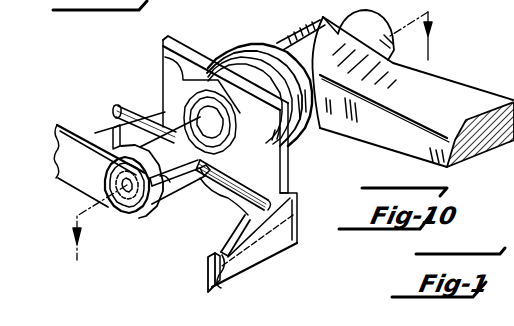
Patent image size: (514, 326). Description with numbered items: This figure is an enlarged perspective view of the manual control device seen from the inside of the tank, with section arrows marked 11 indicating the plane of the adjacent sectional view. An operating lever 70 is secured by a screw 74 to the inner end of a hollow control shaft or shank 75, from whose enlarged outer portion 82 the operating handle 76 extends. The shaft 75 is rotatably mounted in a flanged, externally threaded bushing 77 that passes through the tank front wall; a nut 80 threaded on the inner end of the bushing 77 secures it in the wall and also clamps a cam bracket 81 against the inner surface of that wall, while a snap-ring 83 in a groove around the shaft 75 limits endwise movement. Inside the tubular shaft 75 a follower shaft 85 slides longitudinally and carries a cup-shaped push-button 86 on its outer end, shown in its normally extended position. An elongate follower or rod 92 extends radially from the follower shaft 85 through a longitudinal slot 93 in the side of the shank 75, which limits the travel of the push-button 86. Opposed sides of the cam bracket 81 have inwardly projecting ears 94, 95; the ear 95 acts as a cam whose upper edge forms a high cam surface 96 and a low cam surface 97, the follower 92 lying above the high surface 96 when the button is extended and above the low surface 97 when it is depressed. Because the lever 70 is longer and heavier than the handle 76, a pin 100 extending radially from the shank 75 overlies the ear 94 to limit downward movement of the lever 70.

The section line 11- 11 is at (259, 157).
The operating lever 70 is at (84, 107).
The screw 74 is at (121, 213).
The control shaft 75 is at (174, 168).
The operating handle 76 is at (456, 115).
The bushing 77 is at (244, 54).
The nut 80 is at (165, 57).
The cam bracket 81 is at (205, 53).
The enlarged portion 82 is at (296, 34).
The snap-ring 83 is at (200, 138).
The follower shaft 85 is at (208, 187).
The push-button 86 is at (367, 23).
The follower 92 is at (260, 197).
The slot 93 is at (190, 198).
The ear 94 is at (148, 108).
The ear 95 is at (267, 243).
The high cam surface 96 is at (237, 224).
The low cam surface 97 is at (222, 288).
The pin 100 is at (118, 107).